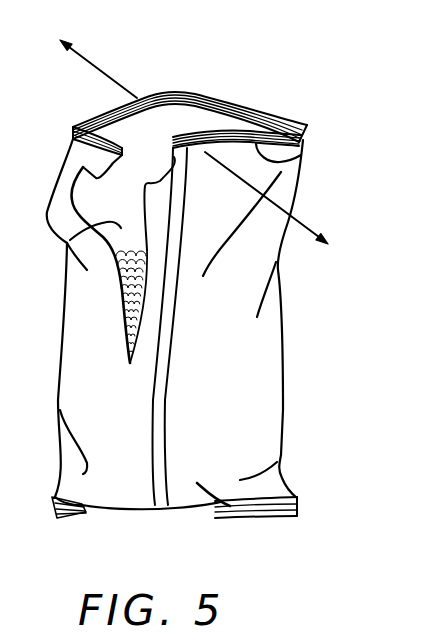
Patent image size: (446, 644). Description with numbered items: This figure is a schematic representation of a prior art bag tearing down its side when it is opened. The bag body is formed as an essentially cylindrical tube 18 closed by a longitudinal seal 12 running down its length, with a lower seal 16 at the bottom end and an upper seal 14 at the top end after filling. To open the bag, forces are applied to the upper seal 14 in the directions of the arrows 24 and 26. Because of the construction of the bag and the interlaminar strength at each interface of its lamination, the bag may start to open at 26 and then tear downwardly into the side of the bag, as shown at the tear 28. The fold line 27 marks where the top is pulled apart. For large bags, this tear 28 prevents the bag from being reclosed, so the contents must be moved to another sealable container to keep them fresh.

The longitudinal seal 12 is at (163, 391).
The upper seal 14 is at (301, 157).
The lower seal 16 is at (273, 520).
The cylindrical tube 18 is at (326, 46).
The arrow 24 is at (275, 198).
The arrow 26 is at (100, 71).
The fold line 27 is at (174, 157).
The tear 28 is at (70, 240).